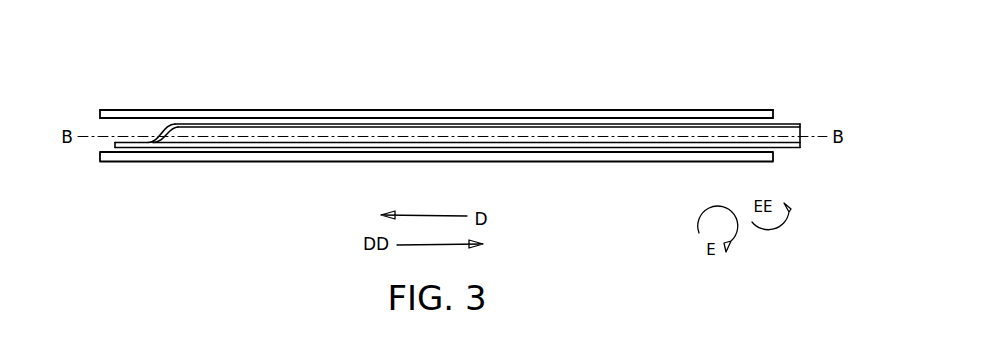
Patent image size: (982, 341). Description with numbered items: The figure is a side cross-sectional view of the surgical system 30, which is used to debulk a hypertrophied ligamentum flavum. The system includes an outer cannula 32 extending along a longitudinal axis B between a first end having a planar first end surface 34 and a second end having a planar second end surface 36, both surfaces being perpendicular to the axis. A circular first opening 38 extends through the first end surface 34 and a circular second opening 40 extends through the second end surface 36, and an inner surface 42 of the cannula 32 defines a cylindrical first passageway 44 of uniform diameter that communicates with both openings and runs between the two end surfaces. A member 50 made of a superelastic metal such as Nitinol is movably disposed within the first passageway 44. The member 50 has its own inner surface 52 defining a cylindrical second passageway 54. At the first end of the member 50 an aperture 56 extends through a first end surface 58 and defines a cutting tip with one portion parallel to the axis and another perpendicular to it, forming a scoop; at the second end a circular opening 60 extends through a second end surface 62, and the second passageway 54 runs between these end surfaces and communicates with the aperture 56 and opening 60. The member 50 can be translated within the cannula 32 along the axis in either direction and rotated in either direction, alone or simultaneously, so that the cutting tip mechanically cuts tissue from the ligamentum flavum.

The surgical system 30 is at (594, 222).
The cannula 32 is at (486, 110).
The first end surface 34 is at (100, 110).
The second end surface 36 is at (761, 110).
The first opening 38 is at (84, 120).
The second opening 40 is at (786, 111).
The inner surface 42 is at (512, 147).
The first passageway 44 is at (262, 152).
The member 50 is at (352, 152).
The inner surface 52 is at (273, 125).
The second passageway 54 is at (418, 126).
The aperture 56 is at (142, 115).
The first end surface 58 is at (114, 144).
The opening 60 is at (814, 118).
The second end surface 62 is at (802, 148).